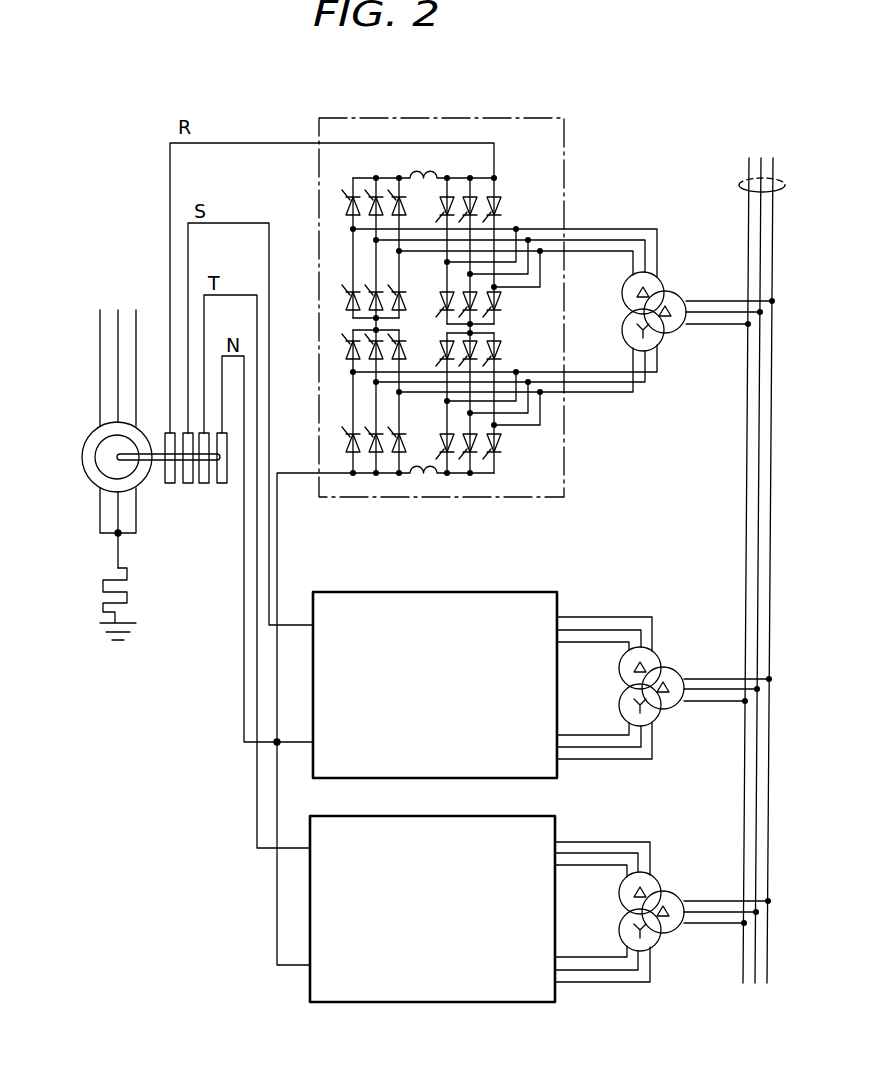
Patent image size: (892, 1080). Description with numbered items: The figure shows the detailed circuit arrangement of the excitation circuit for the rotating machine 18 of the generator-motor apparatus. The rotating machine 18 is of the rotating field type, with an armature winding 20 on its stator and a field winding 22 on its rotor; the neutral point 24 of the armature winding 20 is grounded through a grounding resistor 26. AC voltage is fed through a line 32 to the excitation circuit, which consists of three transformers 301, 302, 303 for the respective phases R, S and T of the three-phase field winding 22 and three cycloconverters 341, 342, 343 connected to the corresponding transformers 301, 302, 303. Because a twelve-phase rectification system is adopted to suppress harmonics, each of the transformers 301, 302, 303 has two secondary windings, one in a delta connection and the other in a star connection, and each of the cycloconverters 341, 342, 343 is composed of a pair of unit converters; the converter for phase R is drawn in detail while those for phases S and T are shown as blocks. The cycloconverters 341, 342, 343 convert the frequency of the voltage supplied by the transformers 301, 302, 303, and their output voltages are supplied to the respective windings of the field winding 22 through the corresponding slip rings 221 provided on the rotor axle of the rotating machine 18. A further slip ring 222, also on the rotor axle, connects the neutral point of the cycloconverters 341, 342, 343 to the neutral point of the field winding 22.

The rotating machine 18 is at (88, 376).
The armature winding 20 is at (92, 432).
The field winding 22 is at (98, 468).
The neutral point 24 is at (117, 534).
The grounding resistor 26 is at (103, 606).
The slip ring 221 is at (208, 490).
The slip ring 222 is at (222, 486).
The line 32 is at (740, 183).
The transformer 301 is at (672, 291).
The transformer 302 is at (670, 667).
The transformer 303 is at (670, 892).
The cycloconverter 341 is at (480, 118).
The cycloconverter 342 is at (513, 592).
The cycloconverter 343 is at (545, 816).